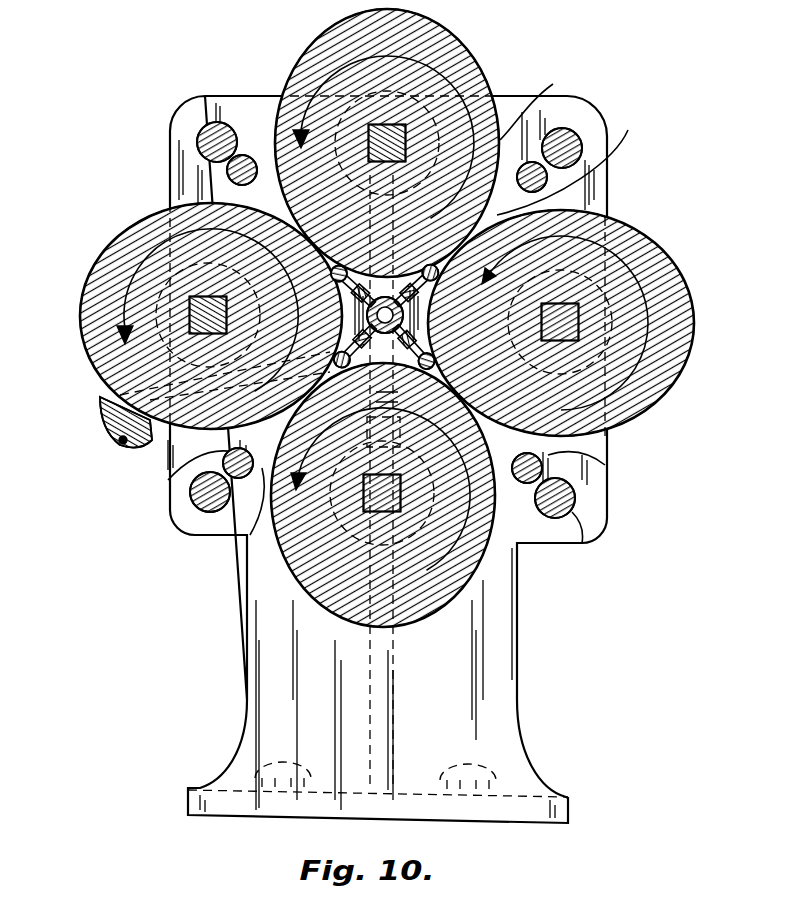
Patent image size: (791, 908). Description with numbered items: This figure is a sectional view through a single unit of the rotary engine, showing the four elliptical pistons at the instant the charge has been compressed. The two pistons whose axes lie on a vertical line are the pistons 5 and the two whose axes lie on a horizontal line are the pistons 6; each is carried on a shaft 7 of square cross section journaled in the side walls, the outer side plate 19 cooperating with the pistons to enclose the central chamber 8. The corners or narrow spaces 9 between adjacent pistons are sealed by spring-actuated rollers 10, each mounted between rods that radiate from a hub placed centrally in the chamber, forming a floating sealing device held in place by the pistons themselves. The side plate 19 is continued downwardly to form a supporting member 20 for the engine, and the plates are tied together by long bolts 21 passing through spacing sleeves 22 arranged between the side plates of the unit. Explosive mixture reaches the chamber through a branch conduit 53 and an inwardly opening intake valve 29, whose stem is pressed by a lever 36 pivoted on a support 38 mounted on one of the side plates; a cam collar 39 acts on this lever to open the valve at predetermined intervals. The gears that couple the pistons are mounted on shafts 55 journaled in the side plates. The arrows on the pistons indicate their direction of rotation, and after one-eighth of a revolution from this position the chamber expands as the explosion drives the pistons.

The piston 5 is at (459, 64).
The piston 6 is at (84, 297).
The shaft 7 is at (372, 134).
The chamber 8 is at (535, 102).
The narrow space 9 is at (570, 163).
The spring-actuated roller 10 is at (340, 265).
The side plate 19 is at (607, 192).
The supporting member 20 is at (518, 582).
The bolt 21 is at (530, 165).
The spacing sleeve 22 is at (522, 160).
The intake valve 29 is at (417, 321).
The lever 36 is at (392, 398).
The support 38 is at (400, 440).
The cam collar 39 is at (385, 90).
The branch conduit 53 is at (145, 450).
The shaft 55 is at (562, 140).